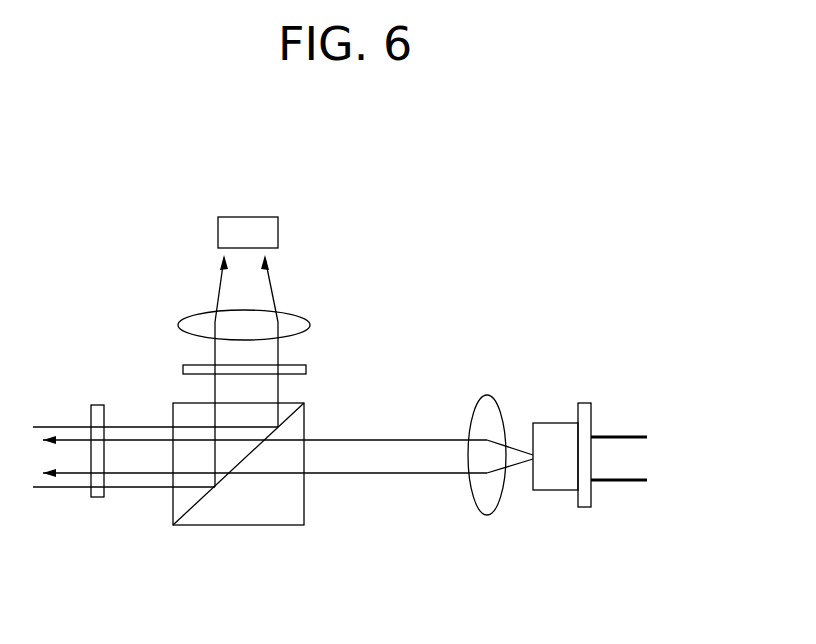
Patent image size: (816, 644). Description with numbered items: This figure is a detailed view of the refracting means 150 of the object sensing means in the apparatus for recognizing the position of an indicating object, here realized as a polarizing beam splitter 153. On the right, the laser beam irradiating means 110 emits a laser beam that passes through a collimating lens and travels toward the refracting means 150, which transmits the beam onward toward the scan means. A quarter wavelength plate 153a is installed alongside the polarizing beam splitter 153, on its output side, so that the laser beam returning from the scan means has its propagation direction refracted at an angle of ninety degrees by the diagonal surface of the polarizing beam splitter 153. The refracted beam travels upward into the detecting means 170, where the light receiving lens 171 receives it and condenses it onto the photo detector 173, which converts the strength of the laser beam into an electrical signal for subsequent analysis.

The laser beam irradiating means 110 is at (547, 507).
The refracting means 150 is at (234, 447).
The polarizing beam splitter 153 is at (306, 368).
The quarter wavelength plate 153a is at (95, 497).
The detecting means 170 is at (281, 233).
The light receiving lens 171 is at (307, 322).
The photo detector 173 is at (273, 233).